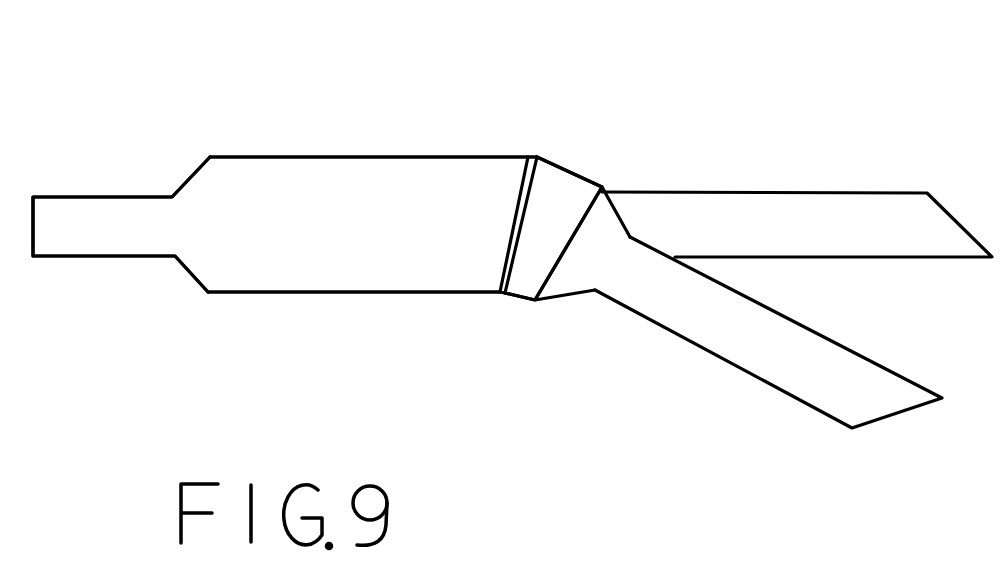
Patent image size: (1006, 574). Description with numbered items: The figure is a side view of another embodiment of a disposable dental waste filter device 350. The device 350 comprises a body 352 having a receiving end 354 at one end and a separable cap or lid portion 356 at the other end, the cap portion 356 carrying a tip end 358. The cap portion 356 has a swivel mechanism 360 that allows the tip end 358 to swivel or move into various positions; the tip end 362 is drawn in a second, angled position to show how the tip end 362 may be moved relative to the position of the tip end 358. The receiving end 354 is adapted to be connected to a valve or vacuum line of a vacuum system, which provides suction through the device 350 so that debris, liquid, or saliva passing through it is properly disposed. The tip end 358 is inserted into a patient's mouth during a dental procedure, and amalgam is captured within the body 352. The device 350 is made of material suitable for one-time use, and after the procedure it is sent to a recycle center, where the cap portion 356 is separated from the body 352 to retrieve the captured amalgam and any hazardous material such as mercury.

The disposable dental waste filter device 350 is at (372, 117).
The body 352 is at (250, 202).
The receiving end 354 is at (78, 247).
The cap portion 356 is at (604, 172).
The tip end 358 is at (828, 235).
The swivel mechanism 360 is at (535, 255).
The tip end 362 is at (800, 362).